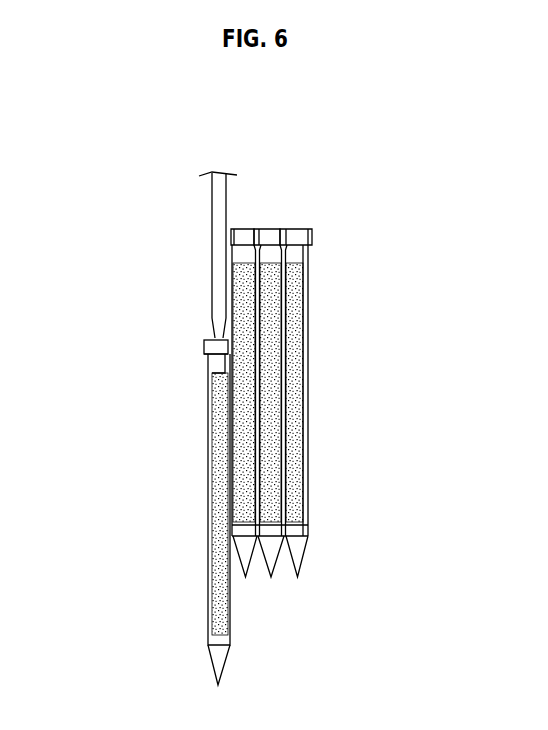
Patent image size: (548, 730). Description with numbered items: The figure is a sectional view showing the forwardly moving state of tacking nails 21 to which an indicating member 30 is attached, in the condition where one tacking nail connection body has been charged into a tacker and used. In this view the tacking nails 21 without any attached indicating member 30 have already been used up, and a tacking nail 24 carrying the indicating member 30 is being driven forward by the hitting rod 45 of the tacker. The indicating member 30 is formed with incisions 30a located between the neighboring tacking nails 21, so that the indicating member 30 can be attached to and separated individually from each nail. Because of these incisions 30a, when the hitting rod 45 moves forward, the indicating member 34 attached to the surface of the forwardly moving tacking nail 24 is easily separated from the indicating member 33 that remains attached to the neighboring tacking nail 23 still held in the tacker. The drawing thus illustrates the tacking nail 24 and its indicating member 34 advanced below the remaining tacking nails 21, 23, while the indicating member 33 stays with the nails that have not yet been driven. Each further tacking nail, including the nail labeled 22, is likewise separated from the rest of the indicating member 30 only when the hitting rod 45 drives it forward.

The tacking nails 21 is at (297, 228).
The second injection needle 22 is at (270, 228).
The neighboring tacking nail 23 is at (243, 228).
The tacking nail 24 is at (205, 350).
The indicating member 30 is at (304, 353).
The incisions 30a is at (232, 425).
The indicating member 33 is at (245, 452).
The indicating member 34 is at (220, 479).
The hitting rod 45 is at (211, 245).